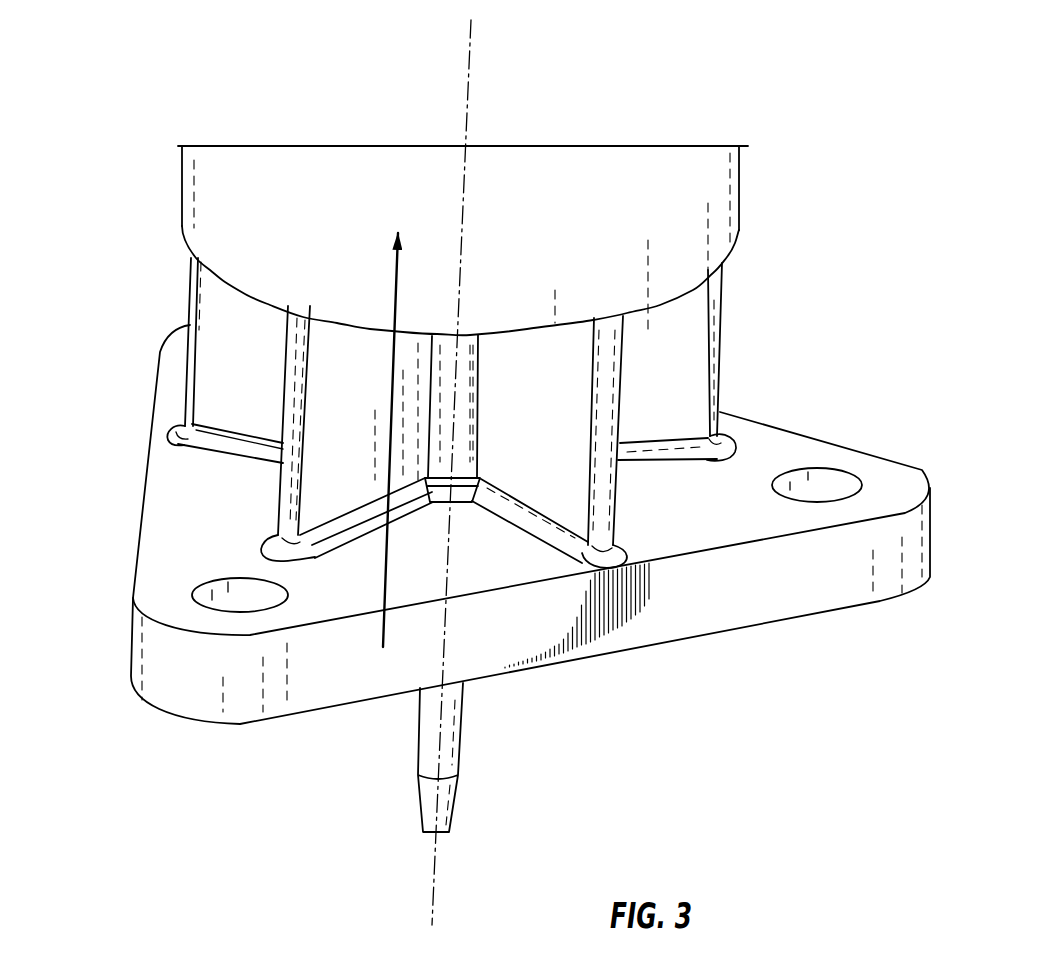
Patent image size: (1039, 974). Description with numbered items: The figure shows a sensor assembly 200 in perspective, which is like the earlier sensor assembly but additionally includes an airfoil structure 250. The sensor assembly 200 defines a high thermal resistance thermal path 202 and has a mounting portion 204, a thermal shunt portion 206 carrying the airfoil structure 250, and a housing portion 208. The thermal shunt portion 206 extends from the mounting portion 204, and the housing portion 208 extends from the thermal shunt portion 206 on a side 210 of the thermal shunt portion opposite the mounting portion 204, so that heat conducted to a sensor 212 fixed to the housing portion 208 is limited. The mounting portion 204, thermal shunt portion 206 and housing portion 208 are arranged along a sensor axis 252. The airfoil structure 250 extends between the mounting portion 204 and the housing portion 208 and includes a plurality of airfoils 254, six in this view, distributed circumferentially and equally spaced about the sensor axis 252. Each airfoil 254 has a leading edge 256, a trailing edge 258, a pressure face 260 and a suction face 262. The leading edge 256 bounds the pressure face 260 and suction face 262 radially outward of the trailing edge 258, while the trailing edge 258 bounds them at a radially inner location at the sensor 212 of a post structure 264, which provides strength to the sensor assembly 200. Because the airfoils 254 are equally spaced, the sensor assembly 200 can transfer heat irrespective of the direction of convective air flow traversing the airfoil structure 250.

The sensor assembly 200 is at (480, 479).
The high thermal resistance thermal path 202 is at (380, 563).
The mounting portion 204 is at (480, 564).
The thermal shunt portion 206 is at (466, 396).
The housing portion 208 is at (147, 195).
The side 210 is at (829, 227).
The sensor 212 is at (460, 733).
The airfoil structure 250 is at (466, 461).
The sensor axis 252 is at (472, 80).
The airfoils 254 is at (337, 448).
The leading edge 256 is at (262, 522).
The trailing edge 258 is at (427, 427).
The pressure face 260 is at (334, 388).
The suction face 262 is at (250, 425).
The post structure 264 is at (632, 415).